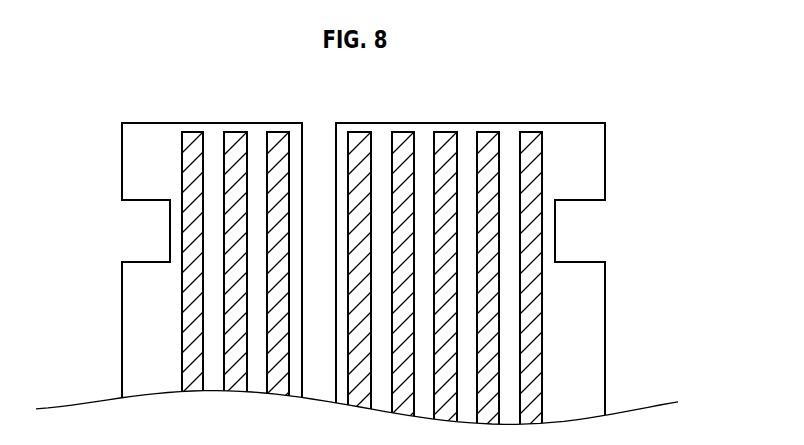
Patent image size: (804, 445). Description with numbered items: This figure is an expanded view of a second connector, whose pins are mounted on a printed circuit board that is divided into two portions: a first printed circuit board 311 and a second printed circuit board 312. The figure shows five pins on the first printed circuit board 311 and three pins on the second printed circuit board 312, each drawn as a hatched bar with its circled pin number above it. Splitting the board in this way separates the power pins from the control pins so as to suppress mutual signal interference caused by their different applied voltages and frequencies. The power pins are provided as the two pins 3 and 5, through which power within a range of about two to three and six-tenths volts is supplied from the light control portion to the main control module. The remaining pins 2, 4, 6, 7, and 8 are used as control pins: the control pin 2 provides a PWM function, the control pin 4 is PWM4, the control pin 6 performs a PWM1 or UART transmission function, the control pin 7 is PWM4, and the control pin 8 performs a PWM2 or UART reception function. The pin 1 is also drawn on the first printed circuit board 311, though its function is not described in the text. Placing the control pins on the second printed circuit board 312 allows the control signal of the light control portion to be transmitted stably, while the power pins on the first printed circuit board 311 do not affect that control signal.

The first electrode finger 1 is at (531, 270).
The control pin 2 is at (488, 270).
The power pin 3 is at (445, 270).
The control pin 4 is at (402, 270).
The power pin 5 is at (360, 270).
The control pin 6 is at (277, 270).
The control pin 7 is at (235, 270).
The control pin 8 is at (193, 270).
The first printed circuit board 311 is at (598, 162).
The second printed circuit board 312 is at (132, 160).